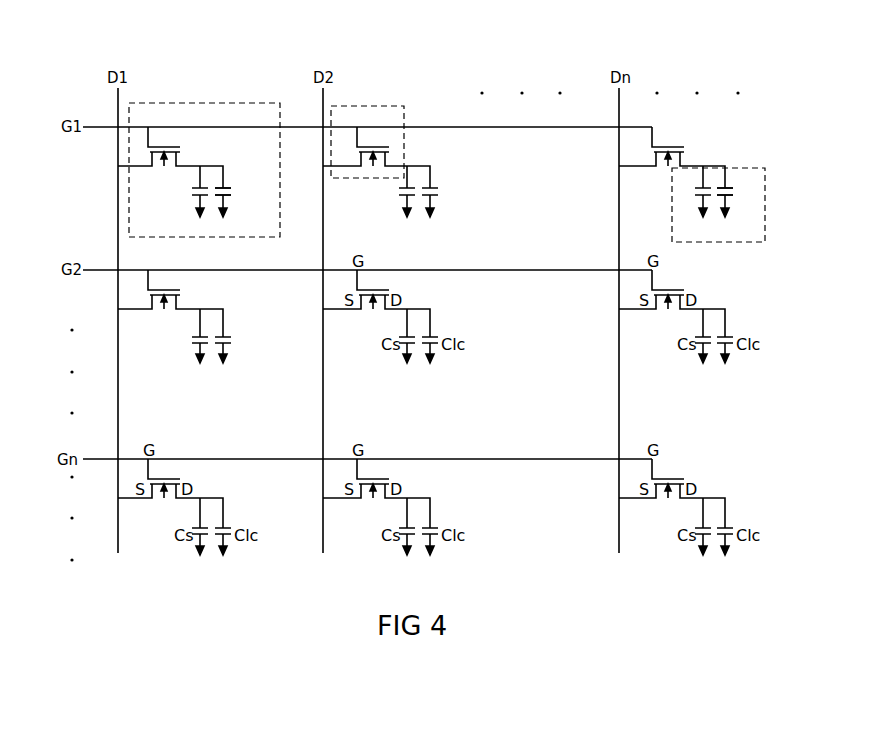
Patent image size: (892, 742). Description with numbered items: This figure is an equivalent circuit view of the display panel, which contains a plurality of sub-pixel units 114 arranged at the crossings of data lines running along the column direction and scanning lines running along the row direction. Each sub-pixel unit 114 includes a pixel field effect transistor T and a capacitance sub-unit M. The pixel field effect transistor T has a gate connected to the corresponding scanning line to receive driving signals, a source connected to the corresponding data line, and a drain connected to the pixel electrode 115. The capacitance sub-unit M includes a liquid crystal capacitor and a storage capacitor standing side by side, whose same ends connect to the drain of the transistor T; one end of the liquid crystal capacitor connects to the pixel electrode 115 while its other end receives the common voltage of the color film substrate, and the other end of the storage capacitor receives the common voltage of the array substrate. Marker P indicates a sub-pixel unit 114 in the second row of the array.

The sub-pixel unit 114 is at (130, 178).
The pixel electrode 115 is at (724, 188).
The pixel field effect transistor T is at (403, 131).
The capacitance sub-unit M is at (672, 185).
The pixel P is at (188, 307).